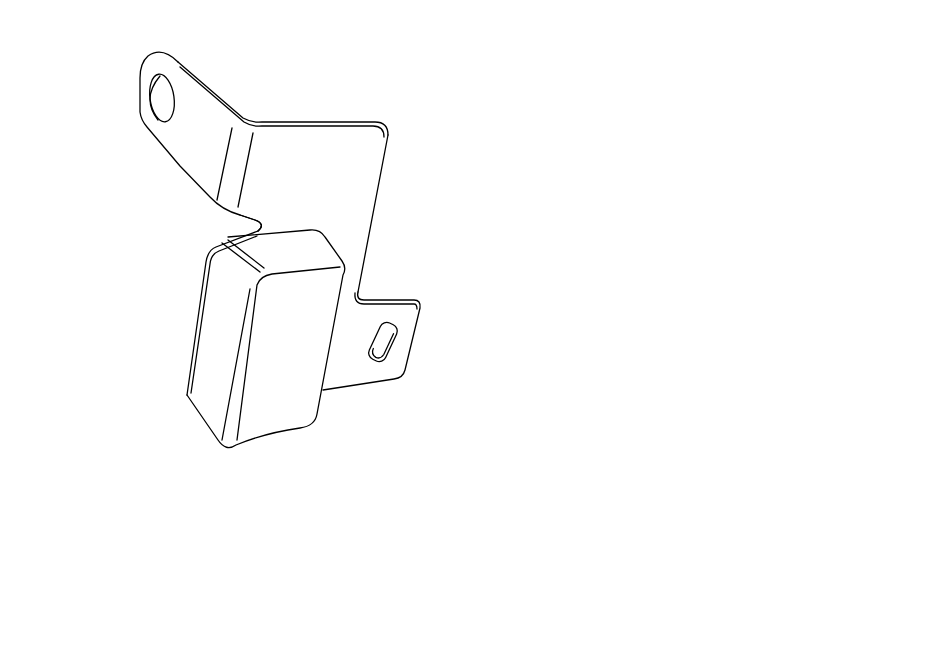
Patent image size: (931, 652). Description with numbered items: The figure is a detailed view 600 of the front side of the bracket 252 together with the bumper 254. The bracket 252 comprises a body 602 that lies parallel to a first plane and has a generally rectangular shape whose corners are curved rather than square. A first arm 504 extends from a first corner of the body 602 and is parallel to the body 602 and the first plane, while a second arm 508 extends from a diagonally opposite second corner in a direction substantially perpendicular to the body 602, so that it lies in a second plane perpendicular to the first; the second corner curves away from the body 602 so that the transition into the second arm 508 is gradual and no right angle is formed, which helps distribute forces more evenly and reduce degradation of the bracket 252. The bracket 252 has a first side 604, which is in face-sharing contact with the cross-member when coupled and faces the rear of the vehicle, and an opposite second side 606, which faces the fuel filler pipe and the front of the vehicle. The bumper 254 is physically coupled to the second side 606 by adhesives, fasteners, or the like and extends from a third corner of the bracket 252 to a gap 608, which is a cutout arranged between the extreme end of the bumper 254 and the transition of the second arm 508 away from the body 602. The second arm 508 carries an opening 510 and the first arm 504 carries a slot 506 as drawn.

The detailed view 600 is at (544, 30).
The bracket 252 is at (331, 118).
The second arm 508 is at (187, 67).
The mounting hole 510 is at (152, 106).
The body 602 is at (320, 212).
The second side 606 is at (370, 190).
The first arm 504 is at (423, 298).
The slot 506 is at (379, 361).
The gap 608 is at (222, 221).
The first side 604 is at (186, 252).
The bumper 254 is at (310, 359).